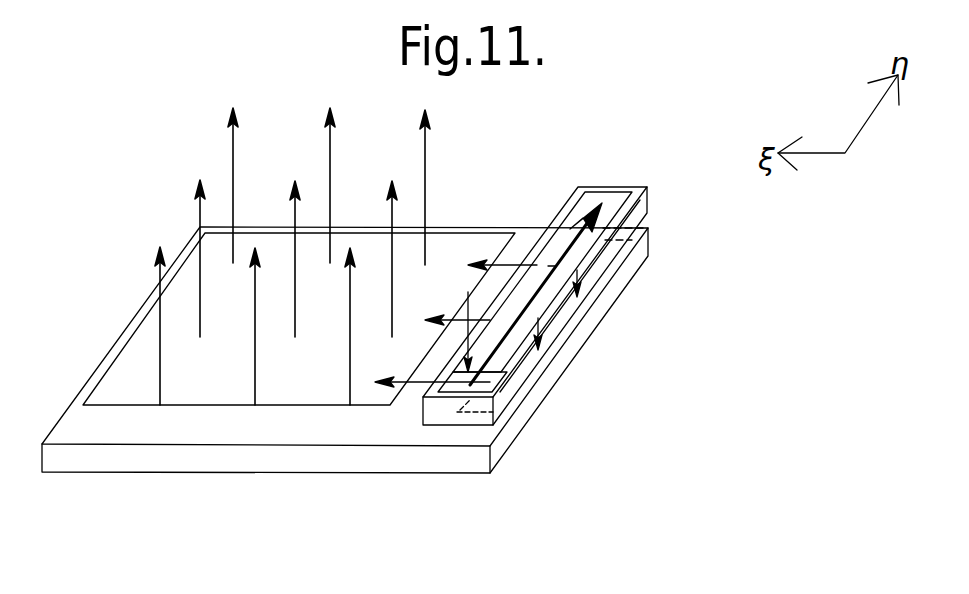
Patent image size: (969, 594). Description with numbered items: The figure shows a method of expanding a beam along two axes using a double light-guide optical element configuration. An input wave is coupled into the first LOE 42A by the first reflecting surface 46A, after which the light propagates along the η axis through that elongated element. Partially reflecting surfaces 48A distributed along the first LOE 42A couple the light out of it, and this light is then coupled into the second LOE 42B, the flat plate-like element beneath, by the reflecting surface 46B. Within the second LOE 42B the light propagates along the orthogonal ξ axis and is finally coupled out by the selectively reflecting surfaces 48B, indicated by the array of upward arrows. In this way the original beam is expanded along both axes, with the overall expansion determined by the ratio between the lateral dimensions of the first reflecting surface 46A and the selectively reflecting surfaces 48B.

The first LOE 42A is at (647, 212).
The second LOE 42B is at (83, 427).
The partially reflecting surfaces 48A is at (530, 282).
The selectively reflecting surfaces 48B is at (187, 296).
The first reflecting surface 46A is at (495, 384).
The reflecting surface 46B is at (548, 339).